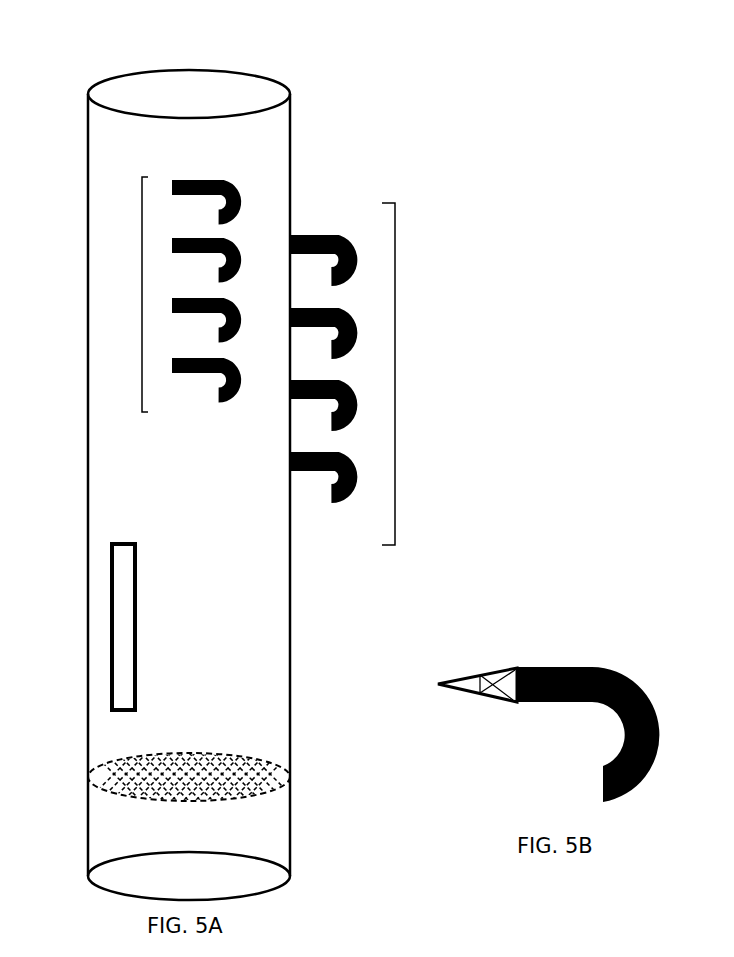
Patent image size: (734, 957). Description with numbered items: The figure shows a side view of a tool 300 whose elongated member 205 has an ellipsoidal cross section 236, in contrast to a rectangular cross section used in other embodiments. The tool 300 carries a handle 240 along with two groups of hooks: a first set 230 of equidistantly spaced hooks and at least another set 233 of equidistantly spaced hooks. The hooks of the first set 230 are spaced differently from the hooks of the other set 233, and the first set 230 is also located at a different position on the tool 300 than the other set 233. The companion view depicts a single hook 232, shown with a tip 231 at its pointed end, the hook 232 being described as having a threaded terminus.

In FIG. 5A, the tool 300 is at (146, 43).
In FIG. 5A, the elongated member 205 is at (88, 486).
In FIG. 5A, the at least another set of equidistantly spaced hooks 233 is at (135, 307).
In FIG. 5A, the first set of equidistantly spaced hooks 230 is at (395, 375).
In FIG. 5A, the handle 240 is at (108, 604).
In FIG. 5A, the ellipsoidal cross section 236 is at (88, 775).
In FIG. 5B, the pointed tip 231 is at (468, 673).
In FIG. 5B, the hook 232 is at (583, 664).